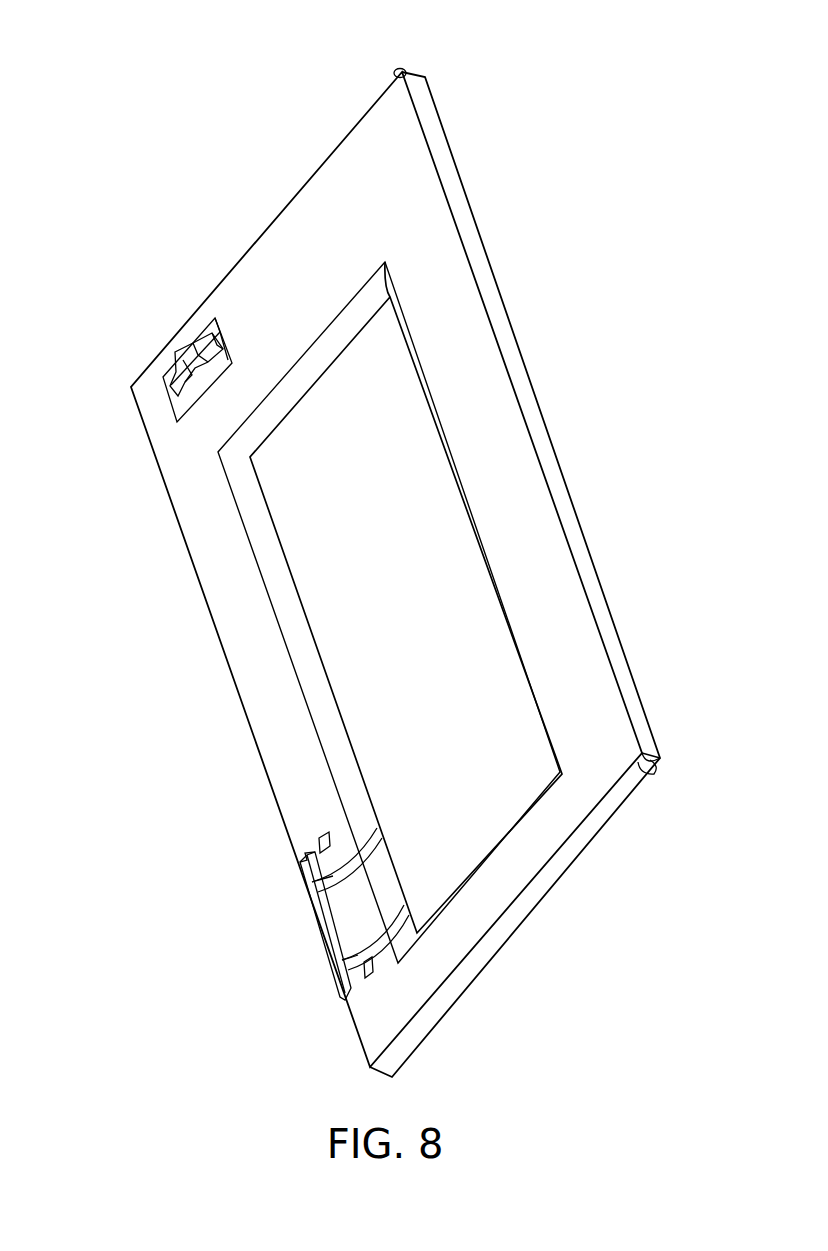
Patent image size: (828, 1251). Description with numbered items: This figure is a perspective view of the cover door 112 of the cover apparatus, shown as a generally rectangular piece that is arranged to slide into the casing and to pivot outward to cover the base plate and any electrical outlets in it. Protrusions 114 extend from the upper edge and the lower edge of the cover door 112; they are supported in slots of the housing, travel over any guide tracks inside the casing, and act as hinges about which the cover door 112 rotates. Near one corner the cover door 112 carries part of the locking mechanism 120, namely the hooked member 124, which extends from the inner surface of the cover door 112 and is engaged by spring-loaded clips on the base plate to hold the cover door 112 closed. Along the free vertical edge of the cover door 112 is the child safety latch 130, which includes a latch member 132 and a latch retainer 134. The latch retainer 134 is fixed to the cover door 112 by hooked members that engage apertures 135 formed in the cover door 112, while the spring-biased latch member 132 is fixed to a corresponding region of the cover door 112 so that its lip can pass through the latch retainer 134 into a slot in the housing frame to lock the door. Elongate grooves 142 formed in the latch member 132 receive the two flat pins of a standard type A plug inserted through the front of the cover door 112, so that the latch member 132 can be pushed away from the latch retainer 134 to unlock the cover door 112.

The cover door 112 is at (492, 88).
The protrusions 114 is at (398, 67).
The locking mechanism 120 is at (178, 412).
The hooked member 124 is at (165, 360).
The child safety latch 130 is at (338, 933).
The latch member 132 is at (355, 907).
The latch retainer 134 is at (343, 958).
The apertures 135 is at (318, 843).
The elongate grooves 142 is at (333, 876).